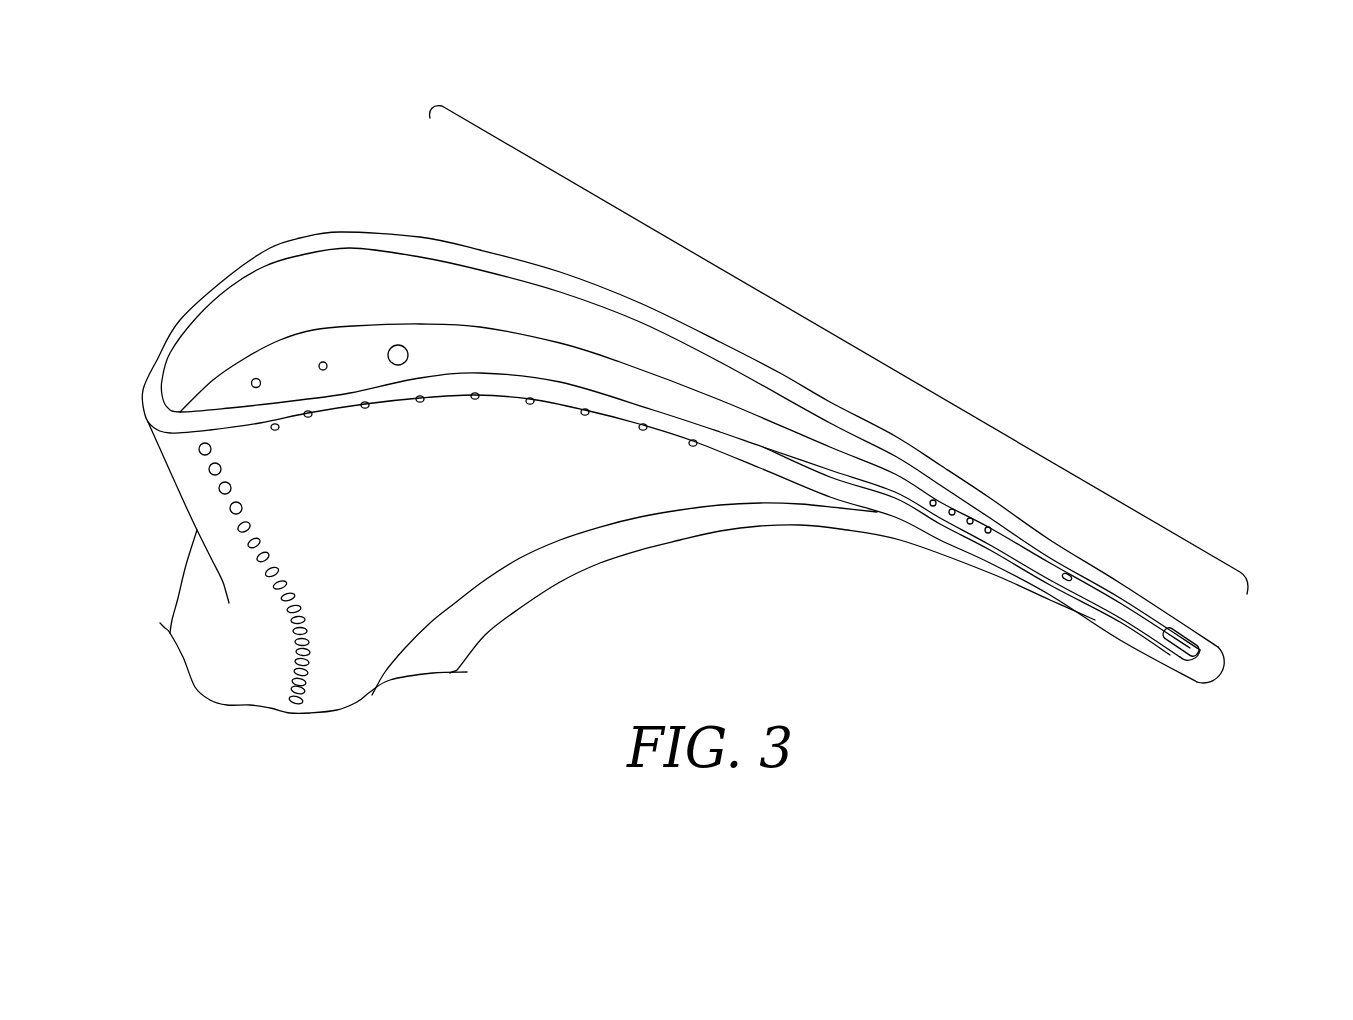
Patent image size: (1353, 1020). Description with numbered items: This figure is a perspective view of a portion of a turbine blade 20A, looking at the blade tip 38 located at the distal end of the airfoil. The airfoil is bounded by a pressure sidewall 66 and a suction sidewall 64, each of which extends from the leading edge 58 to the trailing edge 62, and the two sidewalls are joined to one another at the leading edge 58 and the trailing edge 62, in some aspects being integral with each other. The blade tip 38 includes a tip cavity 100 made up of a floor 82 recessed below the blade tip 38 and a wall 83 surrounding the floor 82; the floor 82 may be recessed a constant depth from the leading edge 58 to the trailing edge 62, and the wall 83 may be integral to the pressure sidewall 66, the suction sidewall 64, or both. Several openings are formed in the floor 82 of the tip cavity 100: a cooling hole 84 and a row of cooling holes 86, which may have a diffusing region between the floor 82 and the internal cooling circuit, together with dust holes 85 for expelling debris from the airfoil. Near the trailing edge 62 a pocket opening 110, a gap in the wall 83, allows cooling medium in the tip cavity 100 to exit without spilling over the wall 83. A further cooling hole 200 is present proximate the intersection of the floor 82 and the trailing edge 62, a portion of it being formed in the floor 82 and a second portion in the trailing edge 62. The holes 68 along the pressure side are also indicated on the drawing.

The turbine blade 20A is at (990, 178).
The blade tip 38 is at (345, 248).
The leading edge 58 is at (104, 399).
The trailing edge 62 is at (1195, 706).
The suction sidewall 64 is at (573, 288).
The pressure sidewall 66 is at (451, 384).
The cooling holes 68 is at (275, 430).
The floor 82 is at (371, 363).
The wall 83 is at (323, 305).
The cooling hole 84 is at (256, 381).
The dust holes 85 is at (398, 345).
The cooling holes 86 is at (951, 500).
The tip cavity 100 is at (853, 338).
The pocket opening 110 is at (1228, 630).
The cooling hole 200 is at (1257, 689).